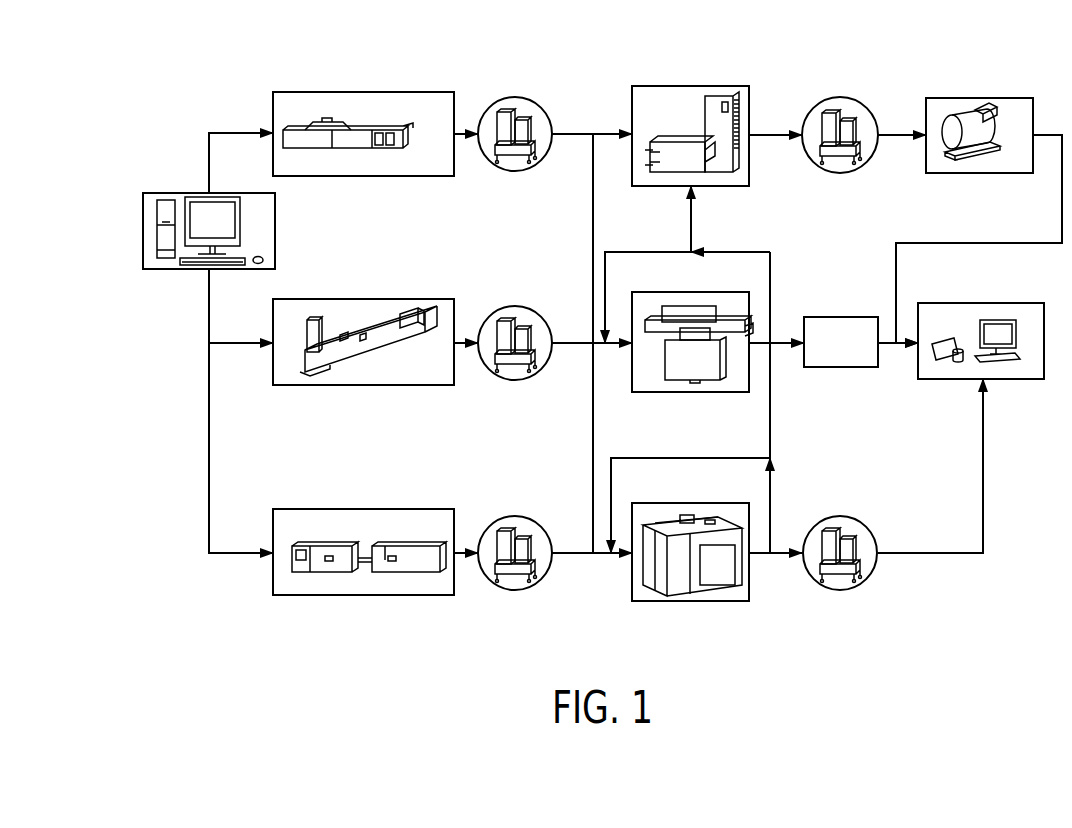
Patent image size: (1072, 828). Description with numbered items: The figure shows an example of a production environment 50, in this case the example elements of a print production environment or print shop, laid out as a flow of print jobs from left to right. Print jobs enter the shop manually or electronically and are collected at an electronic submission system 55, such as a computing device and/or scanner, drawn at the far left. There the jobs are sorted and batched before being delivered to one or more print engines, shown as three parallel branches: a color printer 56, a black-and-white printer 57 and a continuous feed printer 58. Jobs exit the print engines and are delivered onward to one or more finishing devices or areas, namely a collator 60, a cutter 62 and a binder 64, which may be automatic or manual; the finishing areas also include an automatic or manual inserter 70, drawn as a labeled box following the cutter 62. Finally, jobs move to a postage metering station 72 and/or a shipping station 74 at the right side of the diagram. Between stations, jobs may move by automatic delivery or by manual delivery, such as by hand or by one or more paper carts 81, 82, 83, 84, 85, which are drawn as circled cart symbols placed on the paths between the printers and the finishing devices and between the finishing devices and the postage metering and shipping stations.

The production environment 50 is at (238, 97).
The electronic submission system 55 is at (167, 270).
The color printer 56 is at (380, 176).
The black-and-white printer 57 is at (380, 385).
The continuous feed printer 58 is at (380, 595).
The collator 60 is at (708, 186).
The cutter 62 is at (698, 392).
The binder 64 is at (702, 601).
The inserter 70 is at (838, 367).
The postage metering station 72 is at (973, 173).
The shipping station 74 is at (1002, 379).
The paper cart 81 is at (513, 171).
The paper cart 82 is at (513, 380).
The paper cart 83 is at (513, 590).
The paper cart 84 is at (840, 173).
The paper cart 85 is at (840, 590).